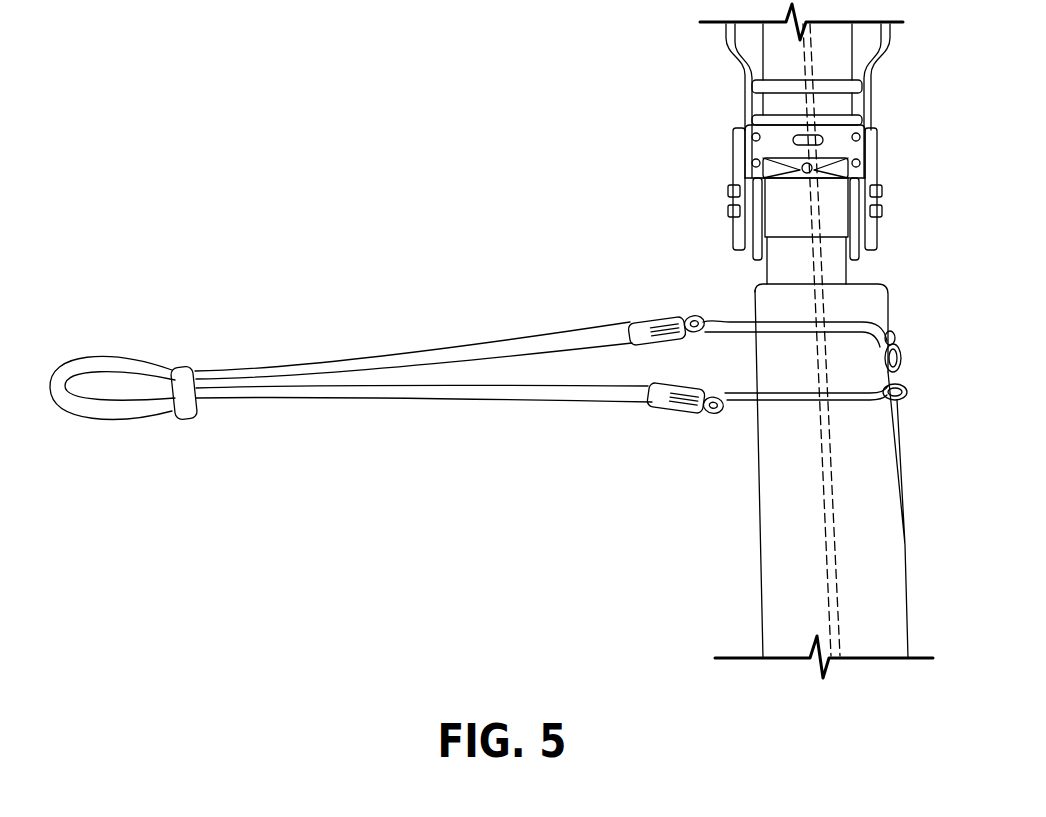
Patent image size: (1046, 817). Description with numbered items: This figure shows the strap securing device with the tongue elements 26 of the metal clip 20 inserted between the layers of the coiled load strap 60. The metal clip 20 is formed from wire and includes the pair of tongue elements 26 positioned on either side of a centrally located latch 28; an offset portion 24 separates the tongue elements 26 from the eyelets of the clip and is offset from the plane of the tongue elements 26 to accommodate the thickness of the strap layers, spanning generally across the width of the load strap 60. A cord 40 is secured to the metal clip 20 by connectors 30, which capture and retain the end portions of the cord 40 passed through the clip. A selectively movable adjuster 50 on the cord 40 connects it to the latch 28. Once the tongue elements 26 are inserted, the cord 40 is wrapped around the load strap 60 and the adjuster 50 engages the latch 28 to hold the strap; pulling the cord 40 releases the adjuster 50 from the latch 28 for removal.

The metal clip 20 is at (885, 308).
The offset portion 24 is at (769, 405).
The tongue elements 26 is at (906, 389).
The latch 28 is at (902, 362).
The connector 30 is at (657, 406).
The cord 40 is at (325, 398).
The adjuster 50 is at (180, 424).
The load strap 60 is at (883, 551).